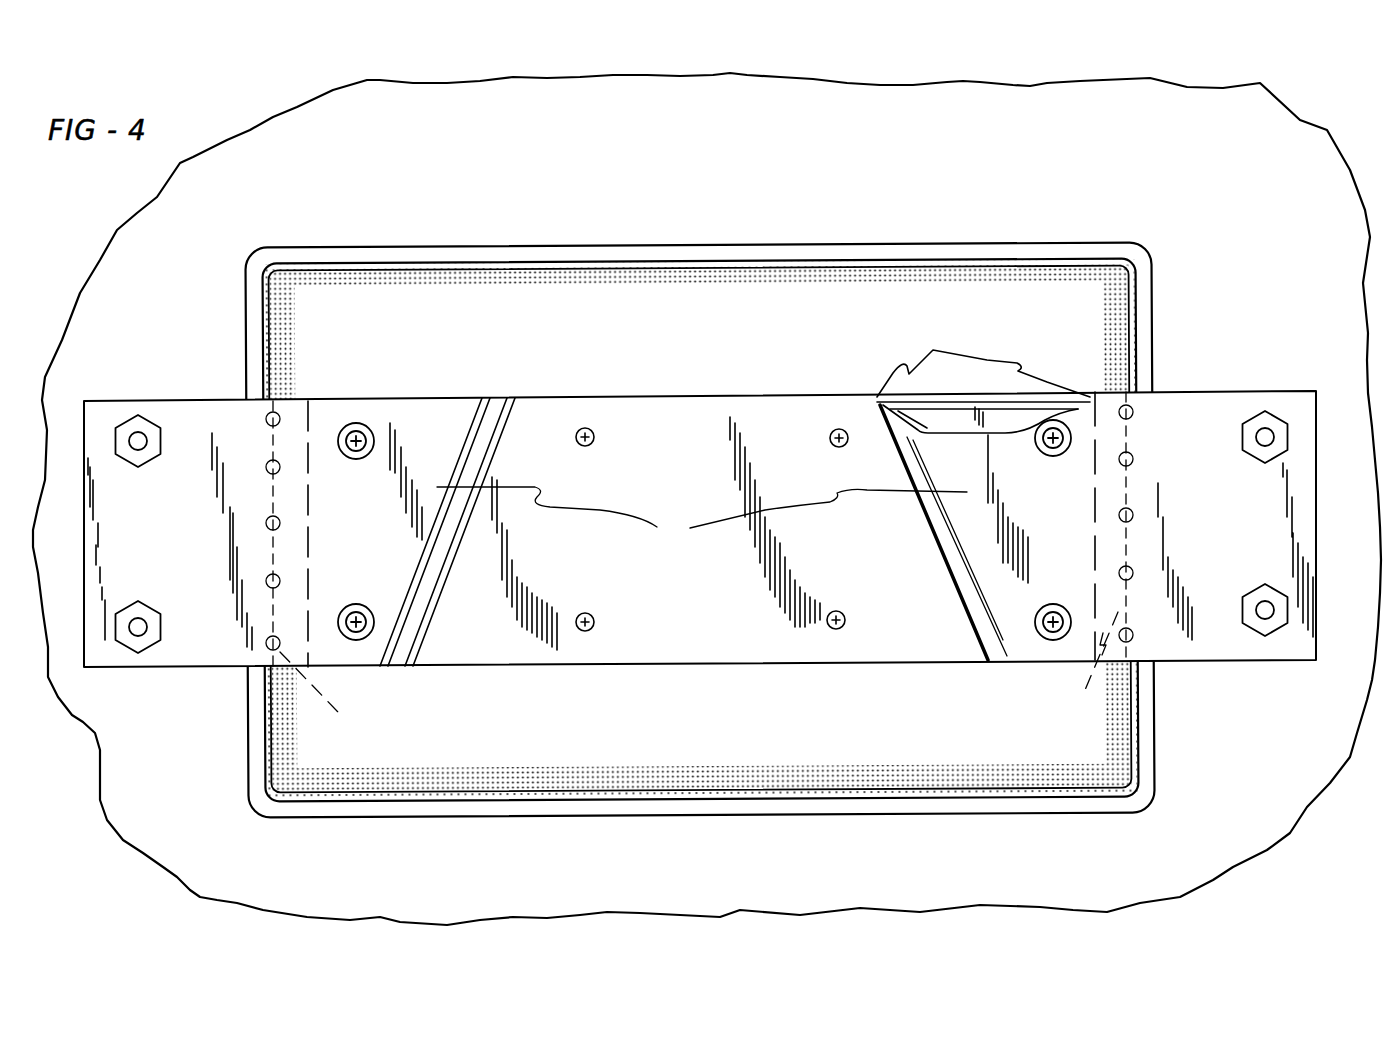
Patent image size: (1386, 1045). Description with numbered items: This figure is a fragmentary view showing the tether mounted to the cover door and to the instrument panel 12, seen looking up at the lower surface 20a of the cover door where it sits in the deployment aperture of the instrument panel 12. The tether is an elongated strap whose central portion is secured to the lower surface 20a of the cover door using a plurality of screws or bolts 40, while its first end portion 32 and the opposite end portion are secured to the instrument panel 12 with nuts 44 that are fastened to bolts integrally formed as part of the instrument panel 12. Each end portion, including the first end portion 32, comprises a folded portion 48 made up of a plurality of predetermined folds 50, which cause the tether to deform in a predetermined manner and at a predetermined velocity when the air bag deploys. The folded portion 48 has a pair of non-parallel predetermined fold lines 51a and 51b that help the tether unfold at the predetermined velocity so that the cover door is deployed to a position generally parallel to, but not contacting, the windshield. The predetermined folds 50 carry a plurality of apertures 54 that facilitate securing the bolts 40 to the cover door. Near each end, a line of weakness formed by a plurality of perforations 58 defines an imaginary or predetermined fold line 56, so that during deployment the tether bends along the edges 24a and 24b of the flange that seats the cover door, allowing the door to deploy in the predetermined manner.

The instrument panel 12 is at (692, 895).
The lower surface 20a is at (357, 307).
The edge 24a is at (1135, 755).
The edge 24b is at (268, 758).
The first end portion 32 is at (1277, 517).
The screws or bolts 40 is at (839, 428).
The nuts 44 is at (148, 467).
The folded portion 48 is at (702, 522).
The predetermined folds 50 is at (983, 415).
The predetermined fold line 51a is at (311, 540).
The predetermined fold line 51b is at (492, 458).
The apertures 54 is at (370, 452).
The predetermined fold lines 56 is at (699, 674).
The perforations 58 is at (268, 424).